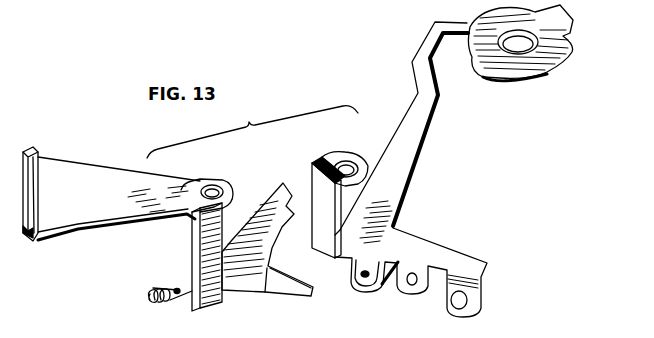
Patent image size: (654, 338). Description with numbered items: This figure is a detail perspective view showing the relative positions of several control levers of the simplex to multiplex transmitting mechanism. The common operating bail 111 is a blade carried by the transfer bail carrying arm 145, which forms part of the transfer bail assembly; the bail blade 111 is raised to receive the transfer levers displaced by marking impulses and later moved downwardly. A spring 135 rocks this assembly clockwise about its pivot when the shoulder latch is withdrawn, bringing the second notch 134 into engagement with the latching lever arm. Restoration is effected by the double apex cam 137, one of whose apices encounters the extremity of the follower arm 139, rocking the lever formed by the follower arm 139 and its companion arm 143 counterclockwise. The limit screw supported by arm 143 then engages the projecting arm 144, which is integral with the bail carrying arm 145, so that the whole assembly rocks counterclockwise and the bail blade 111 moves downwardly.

The common operating bail 111 is at (37, 153).
The second notch 134 is at (296, 172).
The spring 135 is at (157, 290).
The double apex cam 137 is at (572, 36).
The follower arm 139 is at (430, 118).
The lever arm 143 is at (418, 236).
The projecting arm 144 is at (287, 279).
The transfer bail carrying arm 145 is at (113, 208).